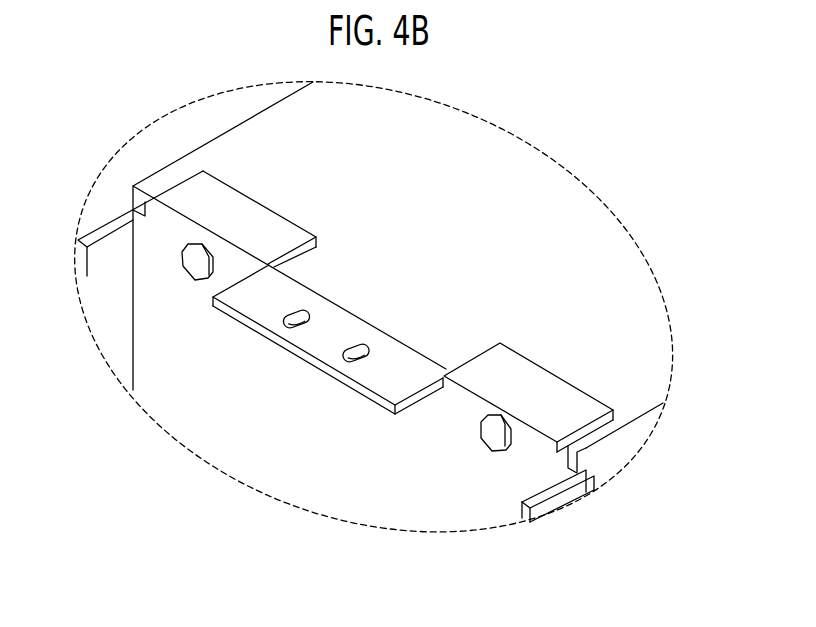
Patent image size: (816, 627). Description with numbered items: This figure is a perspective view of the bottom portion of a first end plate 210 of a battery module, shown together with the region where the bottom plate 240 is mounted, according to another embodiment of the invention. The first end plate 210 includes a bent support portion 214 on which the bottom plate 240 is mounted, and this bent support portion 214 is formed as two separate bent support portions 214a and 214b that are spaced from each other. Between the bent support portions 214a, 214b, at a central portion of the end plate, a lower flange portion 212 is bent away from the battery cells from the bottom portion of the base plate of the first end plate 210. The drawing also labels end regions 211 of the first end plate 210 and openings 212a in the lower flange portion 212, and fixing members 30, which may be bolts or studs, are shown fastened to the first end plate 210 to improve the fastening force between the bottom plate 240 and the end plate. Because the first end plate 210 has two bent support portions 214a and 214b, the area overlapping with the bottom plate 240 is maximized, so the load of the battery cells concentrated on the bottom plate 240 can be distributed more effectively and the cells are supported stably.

The fixing member 30 is at (339, 378).
The first end plate 210 is at (398, 340).
The flange 211 is at (332, 370).
The lower flange portion 212 is at (328, 410).
The slot 212a is at (332, 439).
The bent support portion 214 is at (532, 230).
The bent support portion 214a is at (322, 219).
The bent support portion 214b is at (528, 336).
The bottom plate 240 is at (374, 307).